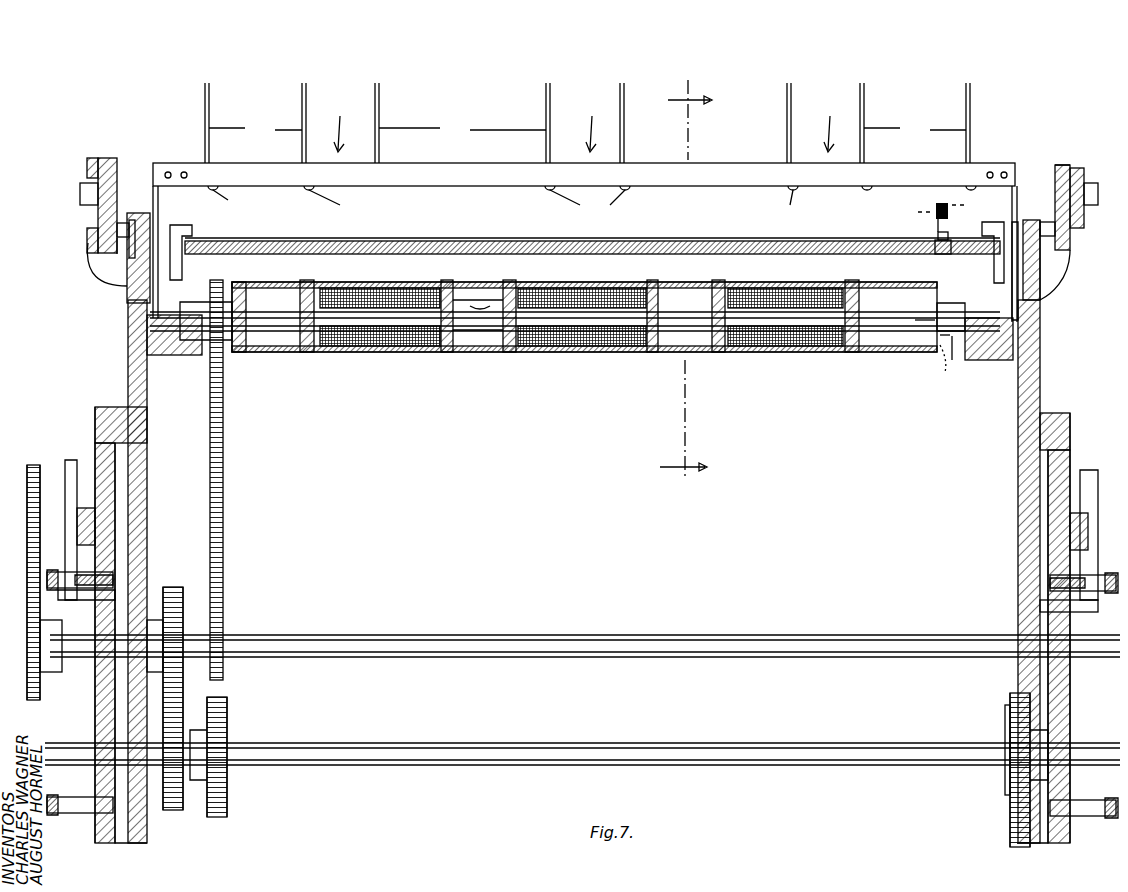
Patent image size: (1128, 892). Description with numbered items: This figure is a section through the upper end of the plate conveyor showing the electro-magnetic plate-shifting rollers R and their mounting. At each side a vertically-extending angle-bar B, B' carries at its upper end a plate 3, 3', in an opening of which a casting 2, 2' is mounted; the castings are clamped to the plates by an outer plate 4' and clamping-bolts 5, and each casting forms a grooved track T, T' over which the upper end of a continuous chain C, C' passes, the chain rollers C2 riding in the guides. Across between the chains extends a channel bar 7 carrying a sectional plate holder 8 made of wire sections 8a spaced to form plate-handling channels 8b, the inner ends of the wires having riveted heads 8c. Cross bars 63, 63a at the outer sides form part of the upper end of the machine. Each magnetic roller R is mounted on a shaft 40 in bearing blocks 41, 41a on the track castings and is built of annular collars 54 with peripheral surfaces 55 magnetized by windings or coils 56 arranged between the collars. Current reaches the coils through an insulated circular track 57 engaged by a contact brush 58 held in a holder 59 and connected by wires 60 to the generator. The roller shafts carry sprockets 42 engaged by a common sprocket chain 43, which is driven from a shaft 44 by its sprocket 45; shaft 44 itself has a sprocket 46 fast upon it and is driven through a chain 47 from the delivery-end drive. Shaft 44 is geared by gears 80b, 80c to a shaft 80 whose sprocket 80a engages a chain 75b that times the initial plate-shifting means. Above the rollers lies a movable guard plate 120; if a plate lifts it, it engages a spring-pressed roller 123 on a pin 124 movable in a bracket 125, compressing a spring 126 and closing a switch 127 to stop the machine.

The channel bar 7 is at (708, 163).
The sectional plate holder 8 is at (205, 107).
The plate holder sections 8a is at (587, 128).
The plate-handling channels 8b is at (584, 123).
The heads 8c is at (592, 203).
The movable guard plate 120 is at (692, 236).
The magnetic rollers R is at (584, 326).
The windings or coils 56 is at (372, 348).
The peripheral surfaces 55 is at (308, 352).
The annular collars 54 is at (476, 352).
The sprockets 42 is at (228, 310).
The shaft 40 is at (188, 310).
The sprocket chain 43 is at (223, 392).
The bearing block 41 is at (187, 355).
The bearing block 41a is at (990, 360).
The insulated circular track 57 is at (905, 348).
The contact brush 58 is at (940, 350).
The wires 60 is at (940, 370).
The holder 59 is at (953, 362).
The switch 127 is at (934, 202).
The spring 126 is at (942, 230).
The pin 124 is at (936, 232).
The spring-pressed roller 123 is at (938, 254).
The casting 2 is at (115, 571).
The track T is at (110, 261).
The cross bar 63a is at (87, 180).
The continuous chain C is at (88, 233).
The spools or rollers C2 is at (136, 225).
The plate 3 is at (122, 523).
The angle-bar B is at (71, 511).
The clamping-bolts 5 is at (50, 572).
The plate A is at (95, 605).
The chain 75b is at (32, 468).
The sprocket 80a is at (40, 630).
The shaft 80 is at (296, 618).
The gear 80b is at (183, 600).
The gear 80c is at (172, 810).
The shaft 44 is at (402, 743).
The sprocket 45 is at (227, 714).
The casting 2' is at (1043, 571).
The track T' is at (1051, 235).
The cross bar 63 is at (1082, 182).
The bracket 125 is at (1016, 225).
The plate 3' is at (1034, 531).
The angle-bar B' is at (1091, 518).
The outer plate or casting 4' is at (1039, 606).
The sprocket 46 is at (1010, 712).
The chain 47 is at (1010, 791).